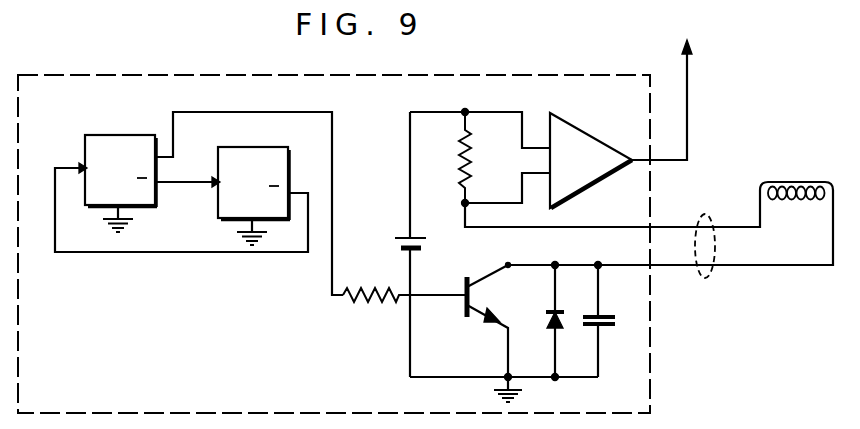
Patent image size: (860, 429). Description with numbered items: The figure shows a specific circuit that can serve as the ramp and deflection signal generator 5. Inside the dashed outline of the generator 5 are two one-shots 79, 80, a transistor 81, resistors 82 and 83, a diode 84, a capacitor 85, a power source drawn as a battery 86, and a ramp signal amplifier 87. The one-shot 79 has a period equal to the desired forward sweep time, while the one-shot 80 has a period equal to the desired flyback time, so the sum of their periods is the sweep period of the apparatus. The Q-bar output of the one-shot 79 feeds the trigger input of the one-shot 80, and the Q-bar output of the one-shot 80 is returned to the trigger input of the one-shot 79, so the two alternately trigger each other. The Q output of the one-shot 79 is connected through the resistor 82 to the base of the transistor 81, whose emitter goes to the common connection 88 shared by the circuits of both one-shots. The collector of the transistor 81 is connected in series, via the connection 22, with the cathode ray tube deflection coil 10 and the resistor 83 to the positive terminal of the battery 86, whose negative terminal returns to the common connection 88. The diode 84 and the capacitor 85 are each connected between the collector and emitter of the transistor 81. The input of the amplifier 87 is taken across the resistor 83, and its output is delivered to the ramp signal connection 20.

The ramp and deflection signal generator 5 is at (228, 75).
The one-shot 79 is at (125, 135).
The one-shot 80 is at (248, 147).
The resistor 82 is at (378, 303).
The battery 86 is at (397, 247).
The resistor 83 is at (460, 160).
The ramp signal amplifier 87 is at (586, 130).
The ramp signal connection 20 is at (688, 96).
The cathode ray tube deflection coil 10 is at (795, 182).
The connection 22 is at (704, 279).
The transistor 81 is at (478, 318).
The diode 84 is at (548, 318).
The capacitor 85 is at (616, 318).
The common connection 88 is at (537, 378).